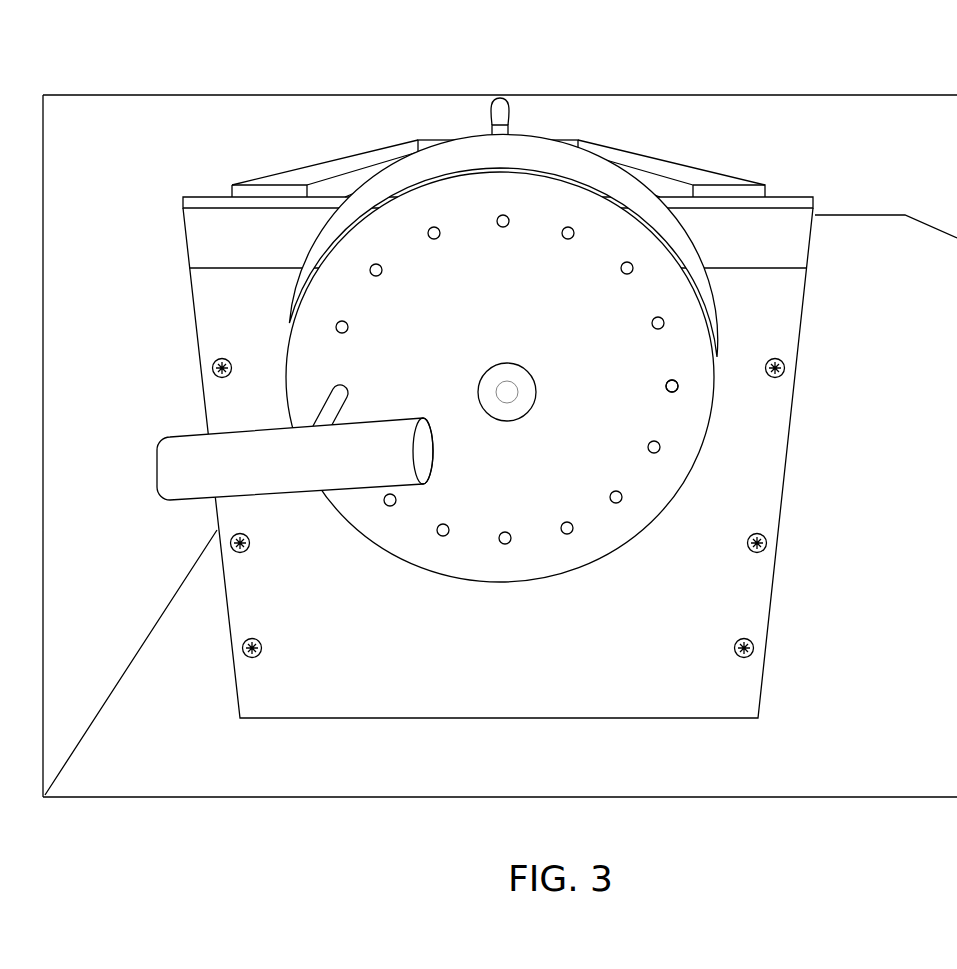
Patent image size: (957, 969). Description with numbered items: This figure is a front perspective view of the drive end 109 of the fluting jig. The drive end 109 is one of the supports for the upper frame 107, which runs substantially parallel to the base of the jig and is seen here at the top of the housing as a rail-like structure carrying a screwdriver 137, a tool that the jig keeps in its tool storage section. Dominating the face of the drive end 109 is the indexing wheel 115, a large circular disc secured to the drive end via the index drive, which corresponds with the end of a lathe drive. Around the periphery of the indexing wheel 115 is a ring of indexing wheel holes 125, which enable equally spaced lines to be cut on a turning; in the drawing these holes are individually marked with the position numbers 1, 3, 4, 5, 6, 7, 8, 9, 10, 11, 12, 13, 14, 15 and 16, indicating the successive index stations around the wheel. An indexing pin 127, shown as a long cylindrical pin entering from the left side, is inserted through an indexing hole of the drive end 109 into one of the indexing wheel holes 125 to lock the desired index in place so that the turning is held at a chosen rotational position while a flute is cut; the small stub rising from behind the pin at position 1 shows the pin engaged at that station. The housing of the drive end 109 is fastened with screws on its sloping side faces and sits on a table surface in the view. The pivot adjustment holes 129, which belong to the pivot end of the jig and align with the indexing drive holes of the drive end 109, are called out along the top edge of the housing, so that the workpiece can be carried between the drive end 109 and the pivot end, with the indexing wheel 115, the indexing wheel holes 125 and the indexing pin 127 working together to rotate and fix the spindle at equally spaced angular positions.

The drive end 109 is at (208, 719).
The pivot adjustment holes 129 is at (210, 194).
The upper frame 107 is at (309, 182).
The screwdriver 137 is at (502, 93).
The indexing wheel 115 is at (700, 290).
The indexing wheel holes 125 is at (674, 392).
The indexing pin 127 is at (172, 452).
The position 1 tube 1 is at (326, 407).
The position 3 hole 3 is at (383, 513).
The position 4 hole 4 is at (440, 545).
The position 5 hole 5 is at (505, 553).
The position 6 hole 6 is at (569, 542).
The position 7 hole 7 is at (624, 509).
The position 8 hole 8 is at (661, 456).
The position 9 hole 9 is at (681, 391).
The position 10 hole 10 is at (674, 321).
The position 11 hole 11 is at (639, 257).
The position 12 hole 12 is at (577, 219).
The position 13 hole 13 is at (502, 204).
The position 14 hole 14 is at (427, 219).
The position 15 hole 15 is at (365, 260).
The position 16 hole 16 is at (328, 321).